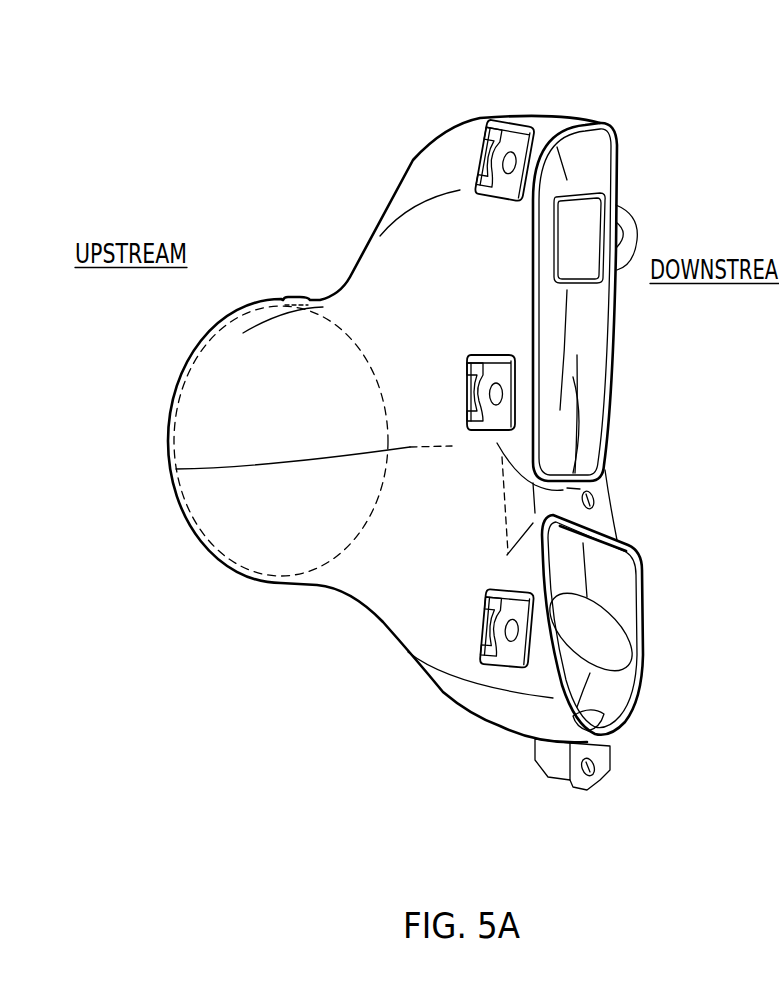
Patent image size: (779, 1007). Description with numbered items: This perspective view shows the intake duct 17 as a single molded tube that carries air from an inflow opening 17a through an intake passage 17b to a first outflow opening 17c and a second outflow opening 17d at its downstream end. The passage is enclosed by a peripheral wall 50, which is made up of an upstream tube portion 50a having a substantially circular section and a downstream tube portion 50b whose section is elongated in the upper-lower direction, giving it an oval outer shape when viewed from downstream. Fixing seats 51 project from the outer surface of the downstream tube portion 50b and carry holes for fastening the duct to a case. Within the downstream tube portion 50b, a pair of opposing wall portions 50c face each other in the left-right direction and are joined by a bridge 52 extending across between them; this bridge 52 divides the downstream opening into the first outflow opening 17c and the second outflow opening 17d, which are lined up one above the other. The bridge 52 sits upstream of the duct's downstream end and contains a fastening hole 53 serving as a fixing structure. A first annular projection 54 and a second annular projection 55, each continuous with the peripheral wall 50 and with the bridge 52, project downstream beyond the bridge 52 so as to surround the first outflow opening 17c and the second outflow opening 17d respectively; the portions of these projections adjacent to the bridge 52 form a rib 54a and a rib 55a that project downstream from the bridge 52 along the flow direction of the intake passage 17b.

The intake duct 17 is at (297, 246).
The inflow opening 17a is at (167, 417).
The intake passage 17b is at (385, 545).
The first outflow opening 17c is at (620, 683).
The second outflow opening 17d is at (593, 338).
The peripheral wall 50 is at (413, 658).
The upstream tube portion 50a is at (267, 320).
The downstream tube portion 50b is at (418, 160).
The opposing wall portions 50c is at (447, 552).
The fixing seats 51 is at (523, 122).
The bridge 52 is at (605, 513).
The fastening hole 53 is at (597, 500).
The first annular projection 54 is at (643, 645).
The rib 54a is at (605, 546).
The second annular projection 55 is at (620, 173).
The rib 55a is at (560, 470).